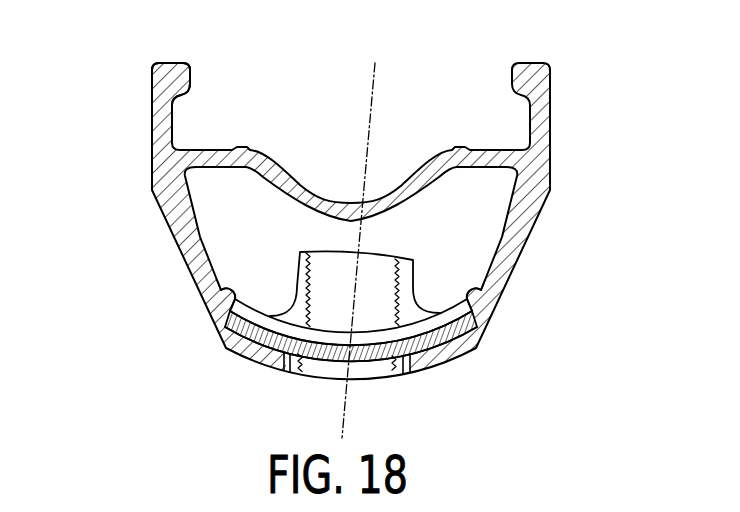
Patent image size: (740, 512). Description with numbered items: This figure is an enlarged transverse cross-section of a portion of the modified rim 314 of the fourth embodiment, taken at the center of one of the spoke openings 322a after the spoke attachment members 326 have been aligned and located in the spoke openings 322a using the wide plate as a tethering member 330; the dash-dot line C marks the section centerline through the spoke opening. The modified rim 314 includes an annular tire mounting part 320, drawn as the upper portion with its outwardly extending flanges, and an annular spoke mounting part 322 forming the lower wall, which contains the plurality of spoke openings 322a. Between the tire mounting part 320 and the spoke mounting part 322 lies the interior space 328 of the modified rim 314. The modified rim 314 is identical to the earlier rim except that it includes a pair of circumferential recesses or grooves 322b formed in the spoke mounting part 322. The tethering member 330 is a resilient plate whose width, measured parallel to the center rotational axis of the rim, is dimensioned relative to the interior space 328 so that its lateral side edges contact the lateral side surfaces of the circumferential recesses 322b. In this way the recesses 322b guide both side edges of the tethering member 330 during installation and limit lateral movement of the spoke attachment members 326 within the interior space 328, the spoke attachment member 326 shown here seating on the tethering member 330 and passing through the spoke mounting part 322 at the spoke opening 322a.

The modified rim 314 is at (150, 93).
The annular tire mounting part 320 is at (553, 93).
The annular spoke mounting part 322 is at (508, 282).
The spoke openings 322a is at (395, 368).
The circumferential recesses 322b is at (218, 296).
The spoke attachment members 326 is at (417, 273).
The interior space 328 is at (473, 227).
The tethering member 330 is at (336, 355).
The center line C is at (345, 409).